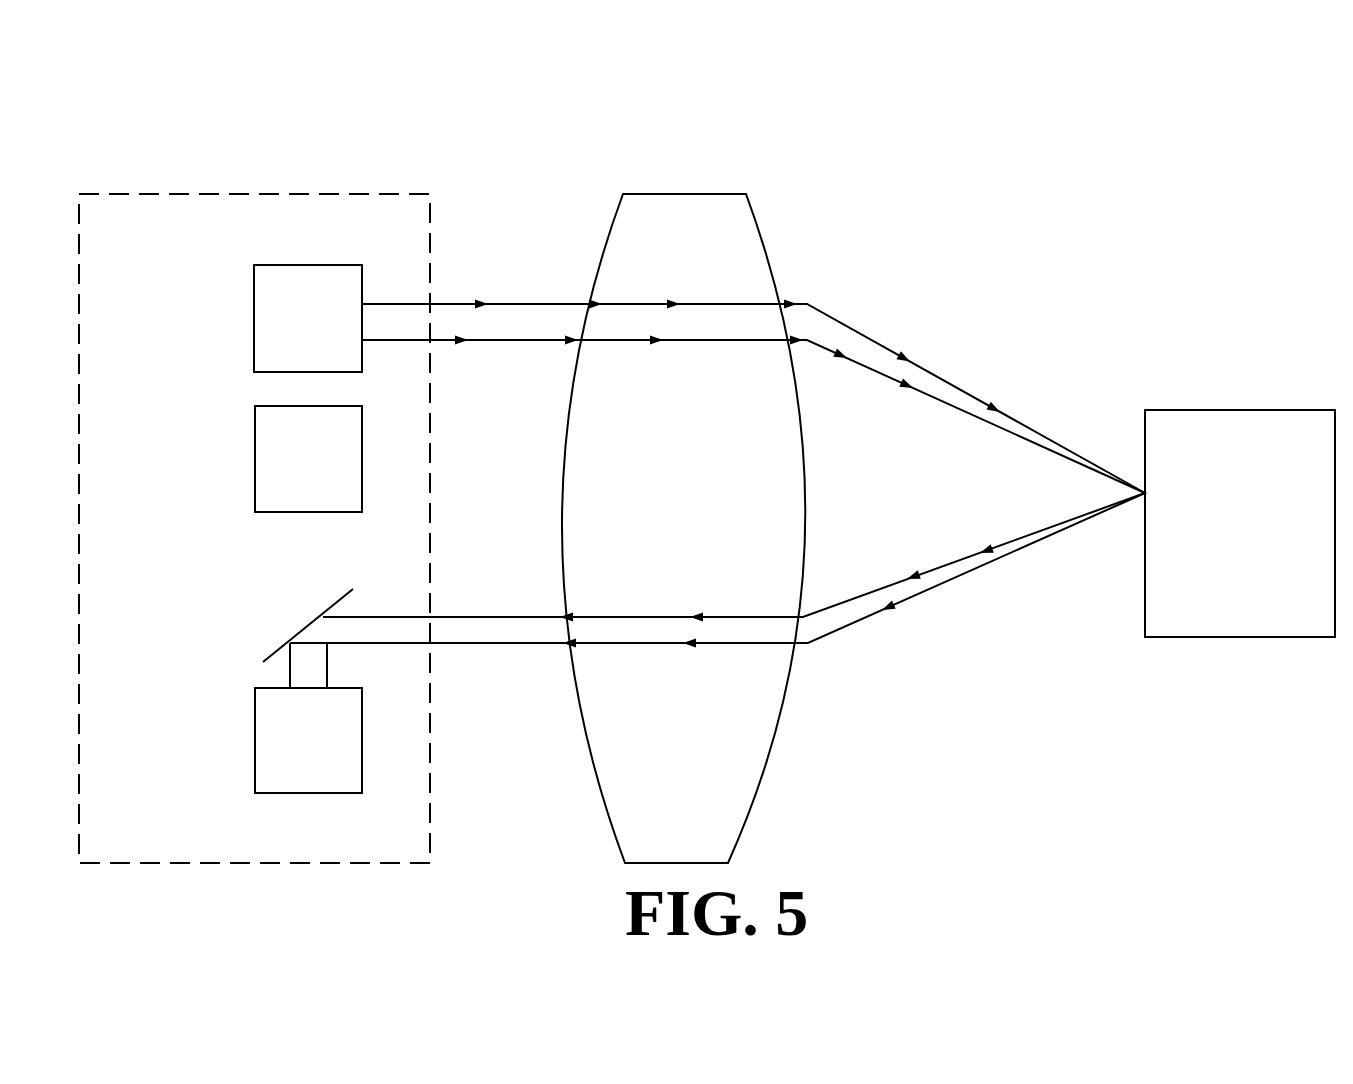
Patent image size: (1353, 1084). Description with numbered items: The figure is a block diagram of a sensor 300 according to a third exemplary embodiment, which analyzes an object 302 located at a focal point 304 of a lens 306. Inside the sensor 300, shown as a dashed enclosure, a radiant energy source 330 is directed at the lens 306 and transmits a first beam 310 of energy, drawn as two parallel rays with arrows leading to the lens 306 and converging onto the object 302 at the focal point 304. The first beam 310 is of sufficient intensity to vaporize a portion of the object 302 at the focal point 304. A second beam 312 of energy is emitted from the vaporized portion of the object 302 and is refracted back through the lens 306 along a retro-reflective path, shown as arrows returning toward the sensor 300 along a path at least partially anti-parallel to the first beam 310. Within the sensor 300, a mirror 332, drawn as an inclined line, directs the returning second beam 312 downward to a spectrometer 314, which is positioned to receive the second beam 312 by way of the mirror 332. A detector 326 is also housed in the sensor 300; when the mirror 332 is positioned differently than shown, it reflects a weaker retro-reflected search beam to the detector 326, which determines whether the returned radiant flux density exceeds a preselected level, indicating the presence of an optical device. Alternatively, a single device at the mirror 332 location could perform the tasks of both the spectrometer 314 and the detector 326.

The sensor 300 is at (168, 192).
The radiant energy source 330 is at (347, 260).
The detector 326 is at (253, 437).
The mirror 332 is at (323, 617).
The spectrometer 314 is at (253, 760).
The lens 306 is at (702, 193).
The first beam 310 is at (520, 245).
The second beam 312 is at (502, 690).
The object 302 is at (1222, 408).
The focal point 304 is at (1142, 500).